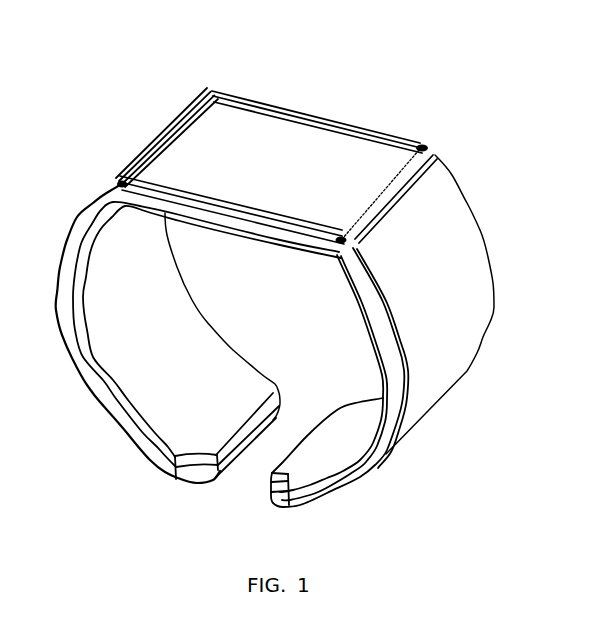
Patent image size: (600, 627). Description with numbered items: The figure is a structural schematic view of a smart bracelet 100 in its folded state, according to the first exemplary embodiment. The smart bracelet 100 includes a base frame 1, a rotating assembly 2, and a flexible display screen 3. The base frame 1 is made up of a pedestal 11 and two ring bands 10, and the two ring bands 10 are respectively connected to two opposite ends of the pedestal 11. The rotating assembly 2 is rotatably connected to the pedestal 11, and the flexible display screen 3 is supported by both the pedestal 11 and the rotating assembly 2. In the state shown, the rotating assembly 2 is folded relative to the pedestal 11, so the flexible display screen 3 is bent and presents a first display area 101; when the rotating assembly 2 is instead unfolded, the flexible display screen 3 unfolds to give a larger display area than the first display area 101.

The smart bracelet 100 is at (299, 85).
The base frame 1 is at (296, 284).
The ring bands 10 is at (394, 358).
The pedestal 11 is at (252, 230).
The rotating assembly 2 is at (126, 170).
The flexible display screen 3 is at (373, 157).
The first display area 101 is at (247, 106).